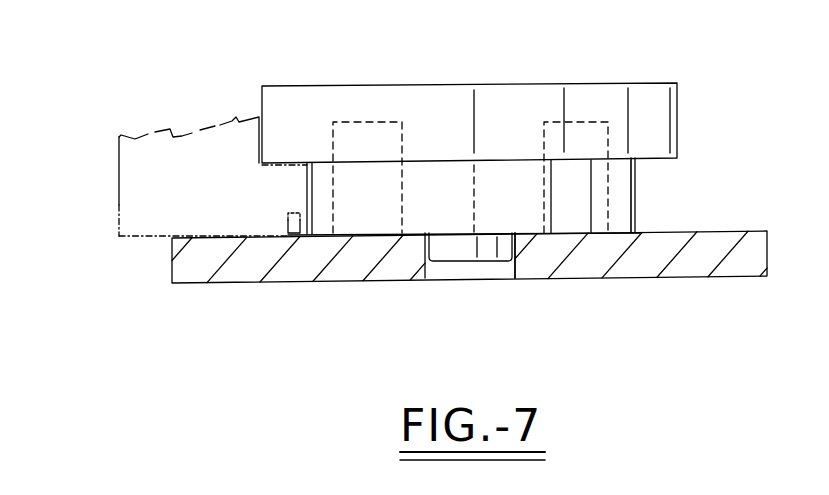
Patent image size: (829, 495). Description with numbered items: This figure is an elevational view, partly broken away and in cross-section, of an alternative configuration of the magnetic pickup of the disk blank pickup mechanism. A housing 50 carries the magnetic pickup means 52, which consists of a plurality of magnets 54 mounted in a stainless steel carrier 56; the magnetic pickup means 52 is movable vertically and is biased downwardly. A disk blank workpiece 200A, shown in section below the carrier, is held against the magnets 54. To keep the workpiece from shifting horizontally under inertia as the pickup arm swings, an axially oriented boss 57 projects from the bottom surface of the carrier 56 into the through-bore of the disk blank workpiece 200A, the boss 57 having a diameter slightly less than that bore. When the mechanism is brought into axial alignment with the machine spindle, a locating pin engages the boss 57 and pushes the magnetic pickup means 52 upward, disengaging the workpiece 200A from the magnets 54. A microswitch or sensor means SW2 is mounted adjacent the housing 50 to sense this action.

The housing 50 is at (118, 243).
The magnetic pickup means 52 is at (245, 91).
The magnets 54 is at (338, 191).
The stainless steel carrier 56 is at (678, 132).
The boss 57 is at (480, 263).
The disk blank workpiece 200A is at (295, 284).
The microswitch or sensor means SW2 is at (286, 226).